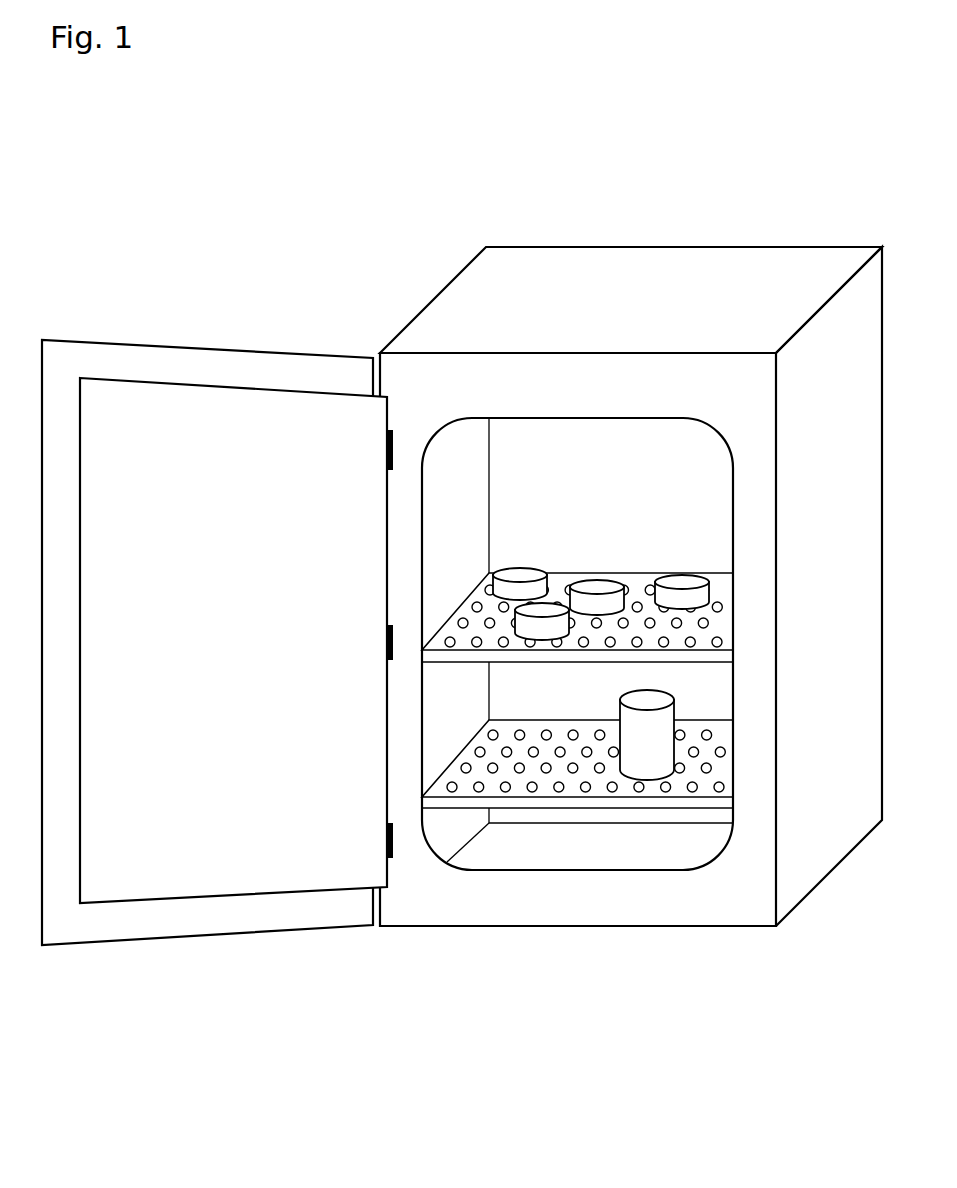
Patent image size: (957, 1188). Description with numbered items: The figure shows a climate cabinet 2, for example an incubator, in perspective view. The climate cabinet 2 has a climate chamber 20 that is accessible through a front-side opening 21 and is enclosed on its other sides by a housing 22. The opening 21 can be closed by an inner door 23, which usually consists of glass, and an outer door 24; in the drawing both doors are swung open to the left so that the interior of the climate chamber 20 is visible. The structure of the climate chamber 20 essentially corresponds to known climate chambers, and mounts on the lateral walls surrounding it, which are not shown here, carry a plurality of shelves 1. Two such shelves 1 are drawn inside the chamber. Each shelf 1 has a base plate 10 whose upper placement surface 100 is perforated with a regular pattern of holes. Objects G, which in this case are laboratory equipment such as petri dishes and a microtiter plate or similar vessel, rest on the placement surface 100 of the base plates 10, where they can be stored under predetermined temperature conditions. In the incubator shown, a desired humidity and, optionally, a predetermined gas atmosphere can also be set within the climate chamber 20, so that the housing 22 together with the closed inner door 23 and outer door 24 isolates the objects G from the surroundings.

The climate cabinet 2 is at (708, 219).
The climate chamber 20 is at (666, 503).
The front-side opening 21 is at (583, 447).
The housing 22 is at (463, 293).
The inner door 23 is at (217, 397).
The outer door 24 is at (122, 346).
The shelf 1 is at (460, 806).
The base plate 10 is at (603, 780).
The placement surface 100 is at (585, 869).
The objects G is at (650, 740).